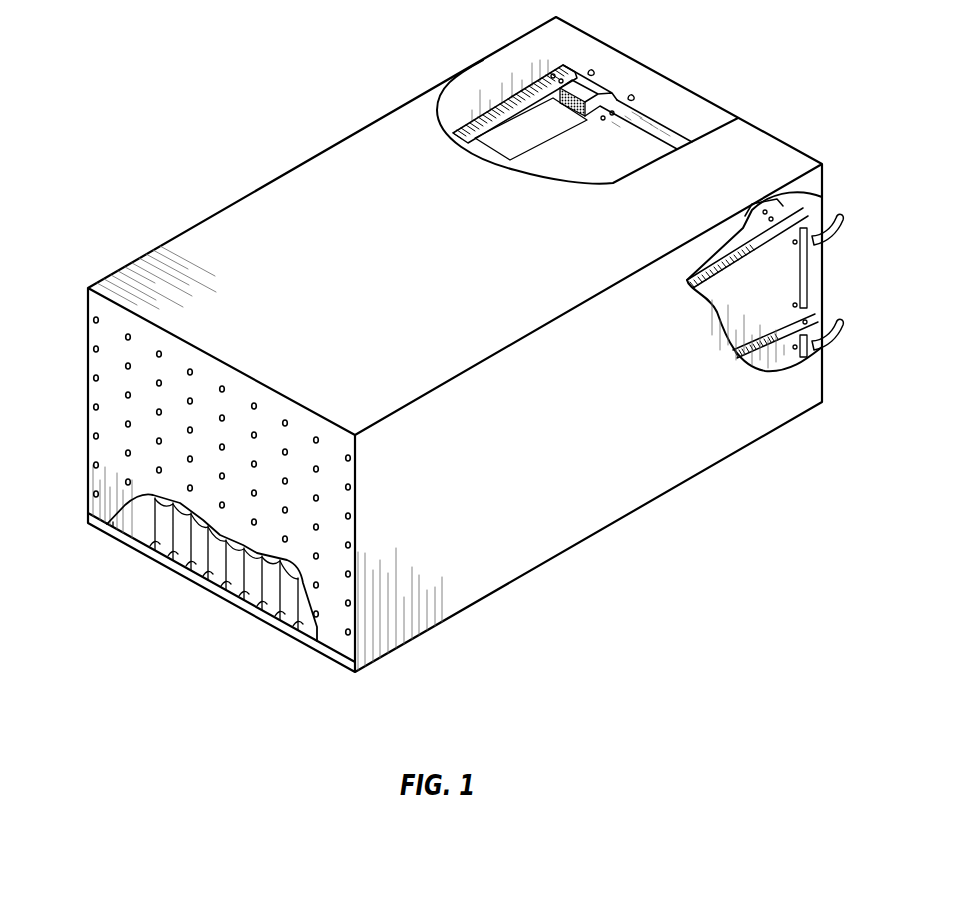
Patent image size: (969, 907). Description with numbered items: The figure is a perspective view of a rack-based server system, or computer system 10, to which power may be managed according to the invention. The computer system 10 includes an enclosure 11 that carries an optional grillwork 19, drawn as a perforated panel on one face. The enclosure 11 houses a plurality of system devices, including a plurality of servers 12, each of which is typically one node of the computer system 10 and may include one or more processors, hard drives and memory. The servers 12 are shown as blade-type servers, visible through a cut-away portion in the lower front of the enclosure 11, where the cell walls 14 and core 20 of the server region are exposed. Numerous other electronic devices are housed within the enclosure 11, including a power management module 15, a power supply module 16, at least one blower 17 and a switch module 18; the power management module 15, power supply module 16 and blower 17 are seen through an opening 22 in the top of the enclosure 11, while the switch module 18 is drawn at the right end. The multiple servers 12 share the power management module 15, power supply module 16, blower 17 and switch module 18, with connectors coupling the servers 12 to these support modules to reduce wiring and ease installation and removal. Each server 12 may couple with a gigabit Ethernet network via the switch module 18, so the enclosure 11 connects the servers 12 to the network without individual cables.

The rack-based server system 10 is at (233, 112).
The enclosure 11 is at (202, 242).
The server 12 is at (153, 497).
The honeycomb cell walls 14 is at (303, 602).
The power management module 15 is at (510, 95).
The power supply module 16 is at (588, 90).
The blower 17 is at (618, 165).
The switch module 18 is at (782, 283).
The grillwork 19 is at (105, 373).
The honeycomb core 20 is at (283, 535).
The top opening 22 is at (738, 117).